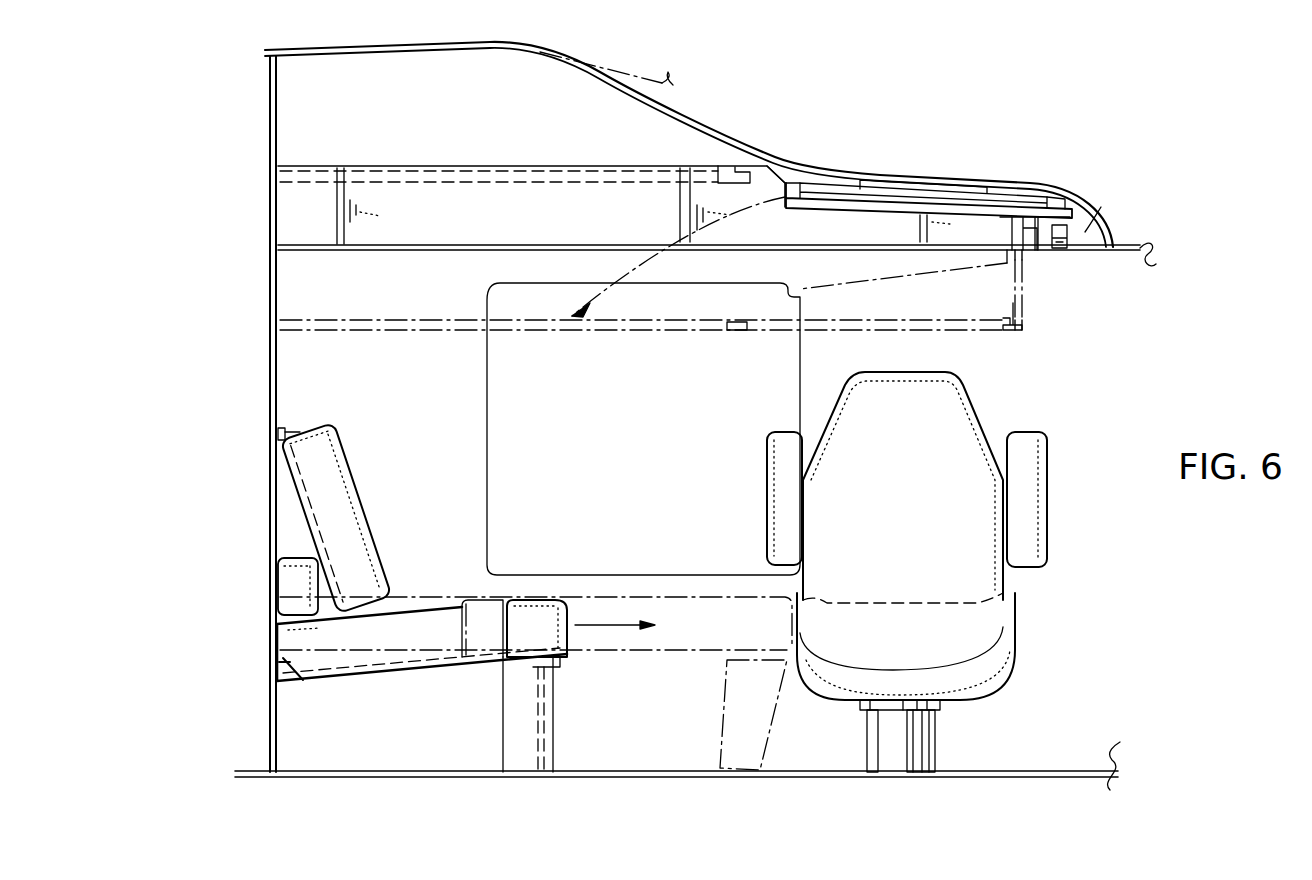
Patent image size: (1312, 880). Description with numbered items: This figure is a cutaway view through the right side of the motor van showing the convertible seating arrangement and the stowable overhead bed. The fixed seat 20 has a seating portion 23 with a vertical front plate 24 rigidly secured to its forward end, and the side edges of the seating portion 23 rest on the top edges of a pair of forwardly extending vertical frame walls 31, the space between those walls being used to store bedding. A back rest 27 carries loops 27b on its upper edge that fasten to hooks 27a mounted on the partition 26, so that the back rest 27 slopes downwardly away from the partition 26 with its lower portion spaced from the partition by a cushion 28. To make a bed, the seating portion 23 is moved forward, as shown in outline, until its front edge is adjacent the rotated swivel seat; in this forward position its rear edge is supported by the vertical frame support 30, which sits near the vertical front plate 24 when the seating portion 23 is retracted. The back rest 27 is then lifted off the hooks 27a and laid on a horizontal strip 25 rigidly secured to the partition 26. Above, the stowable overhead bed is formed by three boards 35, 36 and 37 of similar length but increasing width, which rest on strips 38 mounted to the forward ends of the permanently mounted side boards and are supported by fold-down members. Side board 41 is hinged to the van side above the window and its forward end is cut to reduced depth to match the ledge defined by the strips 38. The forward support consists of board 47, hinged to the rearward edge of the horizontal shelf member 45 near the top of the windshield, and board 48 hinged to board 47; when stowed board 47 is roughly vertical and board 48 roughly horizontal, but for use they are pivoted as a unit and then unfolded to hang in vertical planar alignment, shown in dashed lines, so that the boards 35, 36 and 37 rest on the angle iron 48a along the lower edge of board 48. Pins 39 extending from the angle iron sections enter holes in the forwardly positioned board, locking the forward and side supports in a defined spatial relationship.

The fixed seat 20 is at (371, 722).
The seating portion 23 is at (409, 673).
The vertical front plate 24 is at (503, 743).
The horizontal strip 25 is at (303, 680).
The partition 26 is at (268, 717).
The back rest 27 is at (313, 480).
The hooks 27a is at (279, 427).
The loops 27b is at (295, 435).
The cushion 28 is at (300, 580).
The vertical frame support 30 is at (533, 743).
The vertical frame walls 31 is at (443, 733).
The board 35 is at (893, 183).
The board 36 is at (938, 197).
The board 37 is at (975, 208).
The strips 38 is at (820, 203).
The pins 39 is at (718, 165).
The board 41 is at (764, 186).
The horizontal shelf member 45 is at (1090, 240).
The board 47 is at (1000, 220).
The board 48 is at (1037, 248).
The angle iron 48a is at (1013, 330).